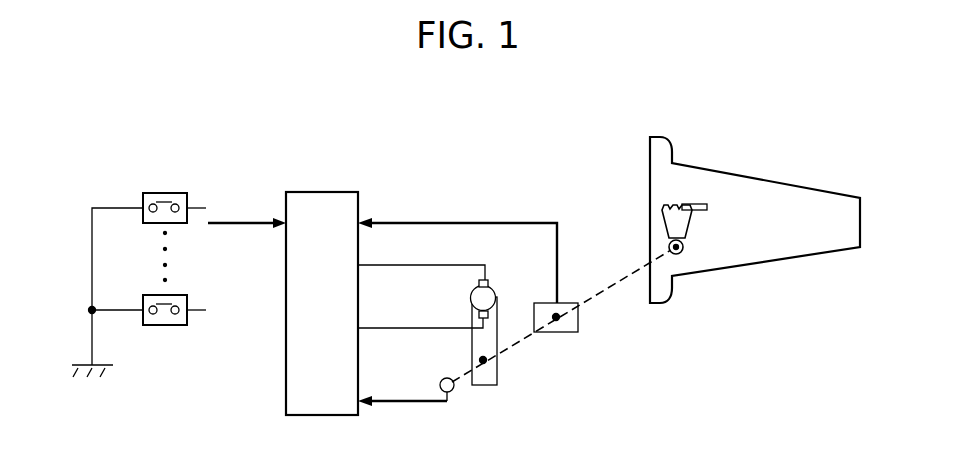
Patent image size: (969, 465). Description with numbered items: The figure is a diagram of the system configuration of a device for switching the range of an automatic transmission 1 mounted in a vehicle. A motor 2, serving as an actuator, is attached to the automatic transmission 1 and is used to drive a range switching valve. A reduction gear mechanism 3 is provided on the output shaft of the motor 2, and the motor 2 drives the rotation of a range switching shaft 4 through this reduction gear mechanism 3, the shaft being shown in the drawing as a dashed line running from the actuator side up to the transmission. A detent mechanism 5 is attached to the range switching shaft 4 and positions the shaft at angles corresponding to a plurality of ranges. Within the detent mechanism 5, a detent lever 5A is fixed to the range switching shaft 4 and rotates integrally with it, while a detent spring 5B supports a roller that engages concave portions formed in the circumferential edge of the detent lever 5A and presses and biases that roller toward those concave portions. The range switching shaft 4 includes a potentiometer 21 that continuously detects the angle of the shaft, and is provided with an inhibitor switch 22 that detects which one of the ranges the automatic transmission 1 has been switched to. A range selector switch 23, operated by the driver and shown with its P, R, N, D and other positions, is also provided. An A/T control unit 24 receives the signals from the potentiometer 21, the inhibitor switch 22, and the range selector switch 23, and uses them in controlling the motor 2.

The automatic transmission 1 is at (790, 158).
The motor 2 is at (472, 295).
The reduction gear mechanism 3 is at (500, 372).
The range switching shaft 4 is at (520, 338).
The detent mechanism 5 is at (680, 200).
The detent lever 5A is at (681, 234).
The detent spring 5B is at (708, 207).
The potentiometer 21 is at (462, 386).
The inhibitor switch 22 is at (578, 324).
The range selector switch 23 is at (143, 197).
The A/T control unit 24 is at (286, 198).